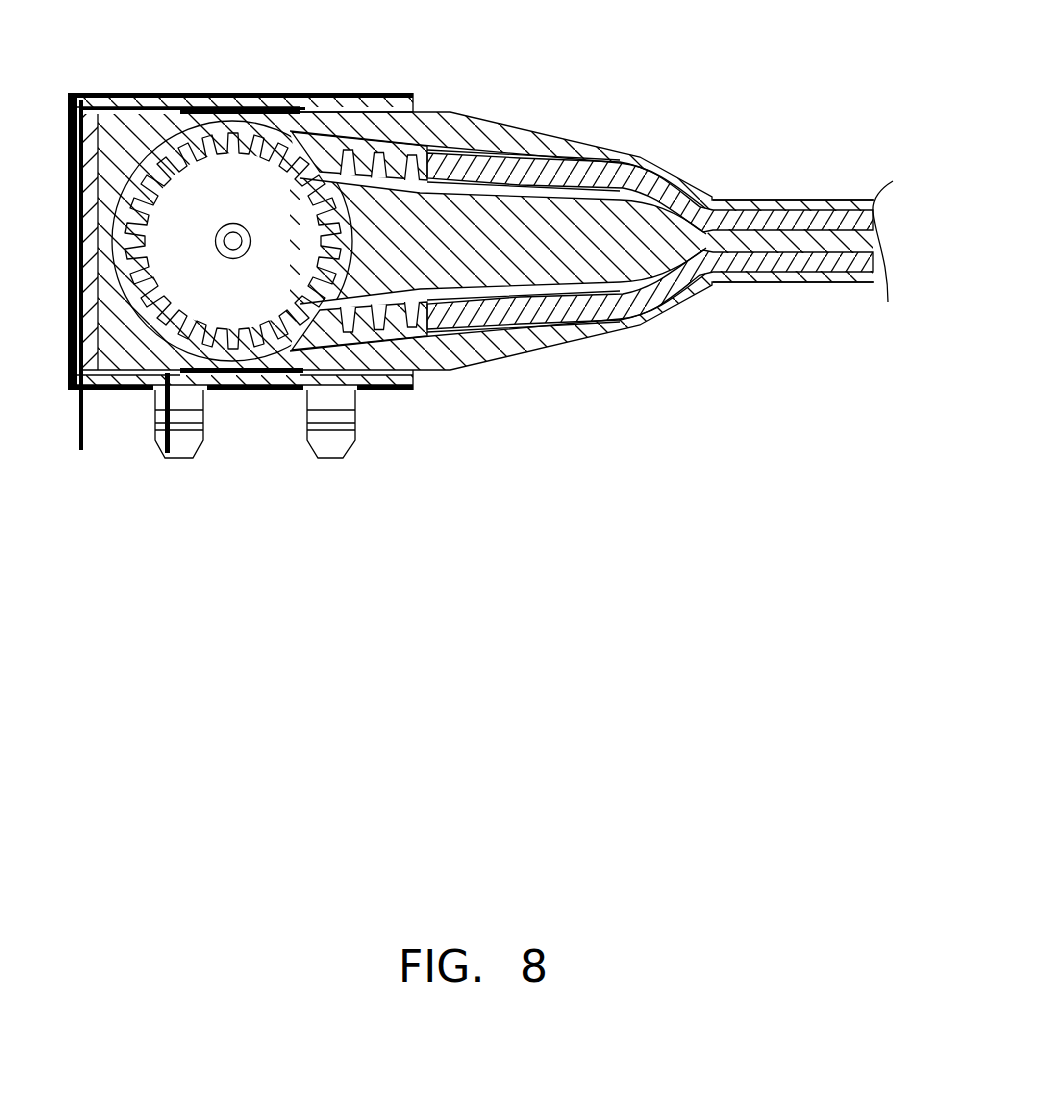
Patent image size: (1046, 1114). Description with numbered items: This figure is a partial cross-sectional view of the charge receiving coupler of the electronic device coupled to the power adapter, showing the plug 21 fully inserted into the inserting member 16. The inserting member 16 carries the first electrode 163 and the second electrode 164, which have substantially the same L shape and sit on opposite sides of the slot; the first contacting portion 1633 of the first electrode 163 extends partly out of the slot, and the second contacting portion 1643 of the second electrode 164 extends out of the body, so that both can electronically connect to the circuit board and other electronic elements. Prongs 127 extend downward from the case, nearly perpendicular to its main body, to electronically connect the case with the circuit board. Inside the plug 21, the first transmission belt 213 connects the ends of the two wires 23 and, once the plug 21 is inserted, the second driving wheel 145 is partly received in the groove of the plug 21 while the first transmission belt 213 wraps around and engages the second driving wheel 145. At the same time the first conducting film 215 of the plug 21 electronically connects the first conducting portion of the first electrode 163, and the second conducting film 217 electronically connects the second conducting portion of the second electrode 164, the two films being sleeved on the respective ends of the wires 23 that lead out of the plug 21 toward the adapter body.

The inserting member 16 is at (75, 127).
The first electrode 163 is at (247, 100).
The first contacting portion 1633 is at (75, 438).
The second contacting portion 1643 is at (167, 413).
The second electrode 164 is at (240, 377).
The plug 21 is at (440, 125).
The first transmission belt 213 is at (150, 170).
The first conducting film 215 is at (183, 107).
The second conducting film 217 is at (213, 380).
The second driving wheel 145 is at (270, 197).
The prongs 127 is at (340, 413).
The wires 23 is at (792, 222).